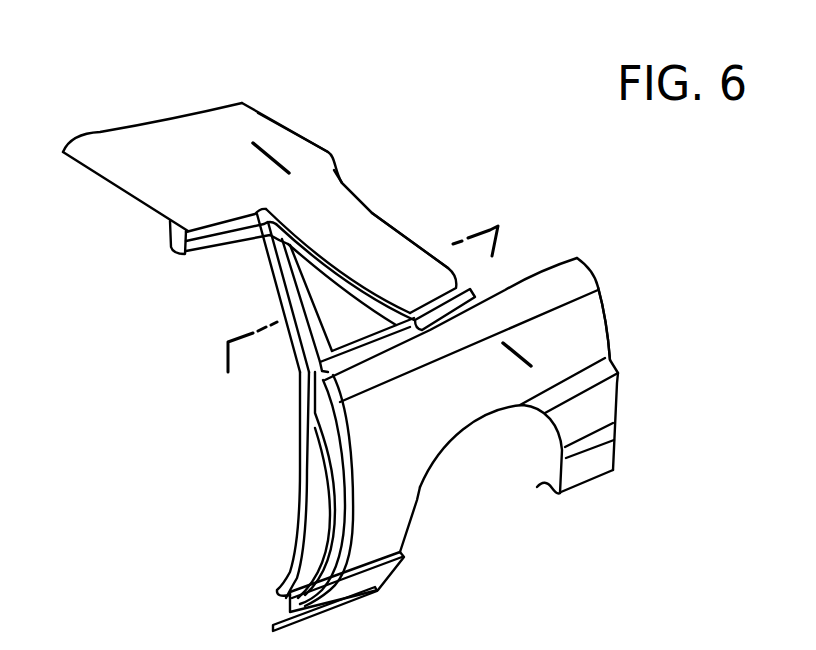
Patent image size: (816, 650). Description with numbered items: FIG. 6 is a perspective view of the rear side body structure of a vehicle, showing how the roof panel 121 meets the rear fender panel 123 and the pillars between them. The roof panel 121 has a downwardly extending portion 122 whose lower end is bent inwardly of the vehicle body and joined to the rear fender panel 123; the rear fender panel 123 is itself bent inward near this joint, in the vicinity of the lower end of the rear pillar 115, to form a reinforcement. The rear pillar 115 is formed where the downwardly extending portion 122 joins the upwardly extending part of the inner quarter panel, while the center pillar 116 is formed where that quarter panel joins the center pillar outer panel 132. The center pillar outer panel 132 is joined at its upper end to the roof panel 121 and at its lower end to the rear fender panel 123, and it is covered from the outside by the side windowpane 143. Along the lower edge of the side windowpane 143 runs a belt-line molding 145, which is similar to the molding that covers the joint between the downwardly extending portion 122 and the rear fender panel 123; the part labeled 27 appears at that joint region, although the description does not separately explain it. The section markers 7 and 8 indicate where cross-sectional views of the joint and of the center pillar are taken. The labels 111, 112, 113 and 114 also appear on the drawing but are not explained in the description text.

The vehicle body side structure 111 is at (507, 79).
The body side panel assembly 112 is at (192, 339).
The roof panel 113 is at (254, 106).
The rear quarter panel 114 is at (560, 261).
The rear pillar 115 is at (357, 190).
The center pillar 116 is at (290, 331).
The roof panel 121 is at (303, 138).
The downwardly extending portion 122 is at (378, 212).
The rear fender panel 123 is at (599, 333).
The center pillar outer panel 132 is at (314, 368).
The side windowpane 143 is at (306, 268).
The belt-line molding 145 is at (375, 350).
The rear window lower rail 27 is at (478, 303).
The section line 7- 7 is at (256, 151).
The section line 8- 8 is at (366, 316).